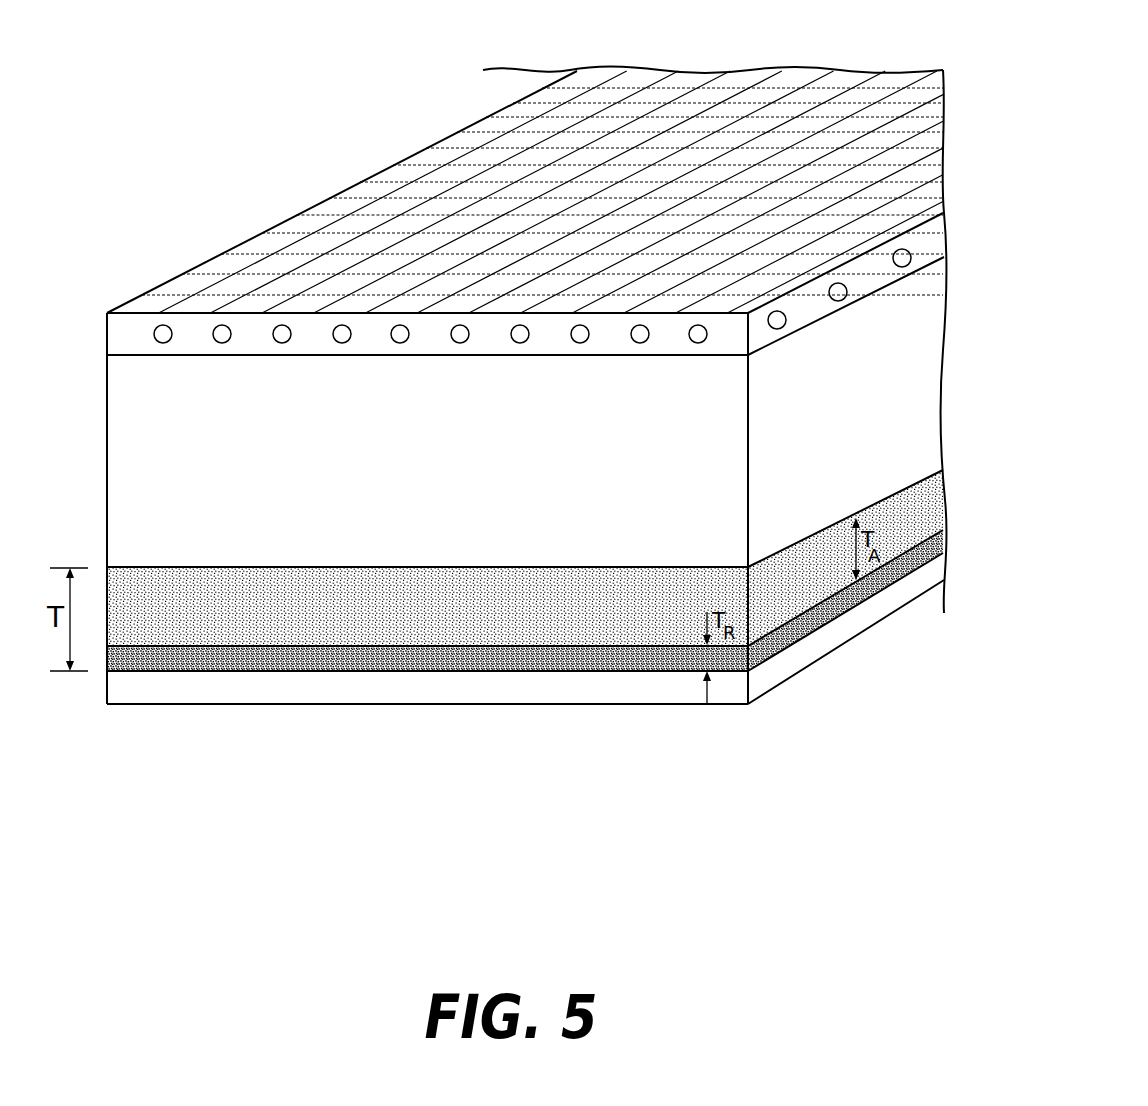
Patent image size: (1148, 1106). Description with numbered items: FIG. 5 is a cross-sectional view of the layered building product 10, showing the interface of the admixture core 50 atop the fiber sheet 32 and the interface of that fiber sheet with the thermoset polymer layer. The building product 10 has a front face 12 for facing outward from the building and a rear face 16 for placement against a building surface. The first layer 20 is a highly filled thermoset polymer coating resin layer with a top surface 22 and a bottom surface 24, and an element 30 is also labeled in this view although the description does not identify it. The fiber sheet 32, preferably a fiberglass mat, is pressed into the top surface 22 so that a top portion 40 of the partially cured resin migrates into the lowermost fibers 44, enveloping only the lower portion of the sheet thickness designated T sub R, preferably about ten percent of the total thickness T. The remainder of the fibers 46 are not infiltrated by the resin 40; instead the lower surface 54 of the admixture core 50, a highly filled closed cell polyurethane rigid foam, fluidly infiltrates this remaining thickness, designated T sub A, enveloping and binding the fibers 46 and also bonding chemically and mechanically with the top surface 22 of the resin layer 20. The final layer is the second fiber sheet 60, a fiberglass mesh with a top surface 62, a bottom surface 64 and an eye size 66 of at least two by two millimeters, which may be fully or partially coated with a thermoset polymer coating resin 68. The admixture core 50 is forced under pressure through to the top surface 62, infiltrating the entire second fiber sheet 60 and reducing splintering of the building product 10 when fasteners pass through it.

The building product 10 is at (250, 90).
The front face 12 is at (653, 705).
The rear face 16 is at (497, 190).
The first layer 20 is at (270, 692).
The top surface 22 is at (168, 647).
The bottom surface 24 is at (817, 660).
The adhesive layer 30 is at (222, 672).
The fiber sheet 32 is at (342, 635).
The top portion of the thermoset coating composition layer 40 is at (402, 673).
The lowermost fibers 44 is at (552, 663).
The remainder of the fibers 46 is at (477, 612).
The admixture core 50 is at (125, 432).
The lower surface 54 is at (188, 647).
The second fiber sheet 60 is at (113, 323).
The top surface 62 is at (220, 277).
The bottom surface 64 is at (247, 358).
The eye size 66 is at (577, 90).
The thermoset polymer coating resin 68 is at (350, 194).